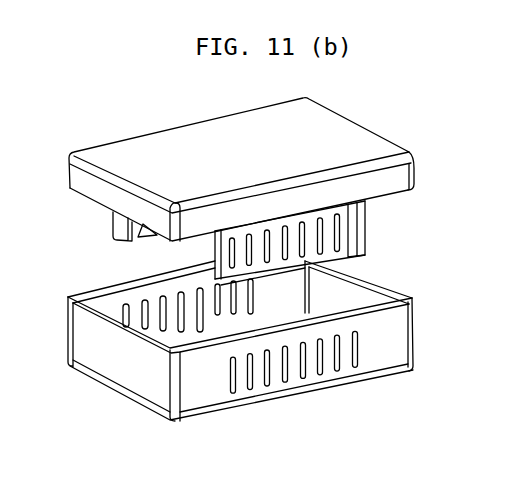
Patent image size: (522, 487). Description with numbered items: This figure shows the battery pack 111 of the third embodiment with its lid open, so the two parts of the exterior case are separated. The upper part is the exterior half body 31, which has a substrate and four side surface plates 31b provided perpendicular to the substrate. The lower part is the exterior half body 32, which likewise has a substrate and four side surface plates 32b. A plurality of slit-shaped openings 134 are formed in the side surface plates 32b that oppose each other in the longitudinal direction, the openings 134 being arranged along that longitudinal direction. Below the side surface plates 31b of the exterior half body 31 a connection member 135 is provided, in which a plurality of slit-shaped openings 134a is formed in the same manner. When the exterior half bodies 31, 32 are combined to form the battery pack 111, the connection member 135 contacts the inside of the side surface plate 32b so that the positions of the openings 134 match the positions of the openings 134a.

The battery pack 111 is at (142, 70).
The exterior half body 31 is at (373, 122).
The side surface plate 31b is at (402, 180).
The connection member 135 is at (367, 228).
The opening 134a is at (366, 250).
The exterior half body 32 is at (140, 420).
The side surface plate 32b is at (398, 341).
The opening 134 is at (337, 367).